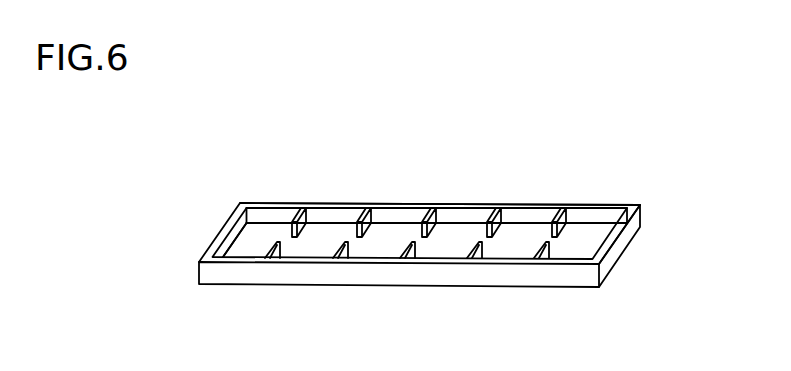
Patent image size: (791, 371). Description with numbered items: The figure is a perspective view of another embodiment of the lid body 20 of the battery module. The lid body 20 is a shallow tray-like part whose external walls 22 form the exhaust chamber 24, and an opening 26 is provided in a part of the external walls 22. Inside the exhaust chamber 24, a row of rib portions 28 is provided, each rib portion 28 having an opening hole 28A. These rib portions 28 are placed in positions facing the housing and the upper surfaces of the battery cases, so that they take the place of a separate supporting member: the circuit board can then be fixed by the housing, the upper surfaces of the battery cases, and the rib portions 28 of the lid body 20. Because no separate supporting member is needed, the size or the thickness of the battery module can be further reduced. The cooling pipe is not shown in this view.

The lid body 20 is at (214, 122).
The external walls 22 is at (525, 206).
The exhaust chamber 24 is at (582, 227).
The opening 26 is at (640, 229).
The rib portions 28 is at (421, 222).
The opening hole 28A is at (480, 241).